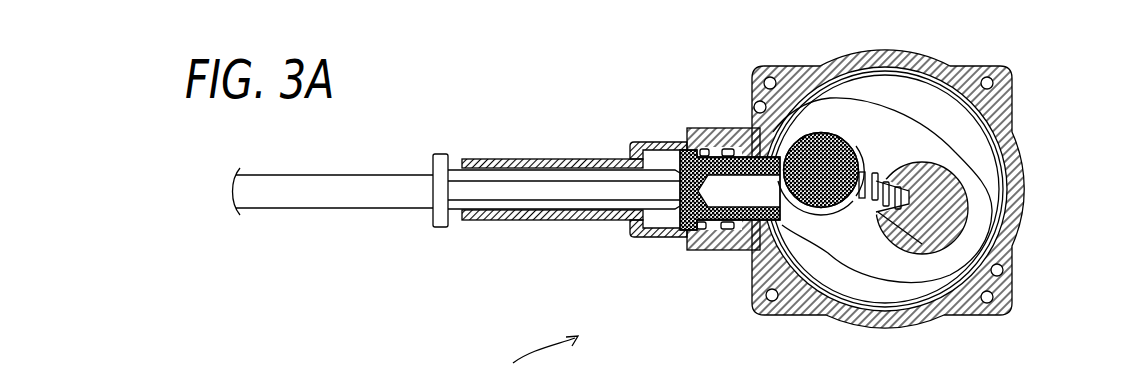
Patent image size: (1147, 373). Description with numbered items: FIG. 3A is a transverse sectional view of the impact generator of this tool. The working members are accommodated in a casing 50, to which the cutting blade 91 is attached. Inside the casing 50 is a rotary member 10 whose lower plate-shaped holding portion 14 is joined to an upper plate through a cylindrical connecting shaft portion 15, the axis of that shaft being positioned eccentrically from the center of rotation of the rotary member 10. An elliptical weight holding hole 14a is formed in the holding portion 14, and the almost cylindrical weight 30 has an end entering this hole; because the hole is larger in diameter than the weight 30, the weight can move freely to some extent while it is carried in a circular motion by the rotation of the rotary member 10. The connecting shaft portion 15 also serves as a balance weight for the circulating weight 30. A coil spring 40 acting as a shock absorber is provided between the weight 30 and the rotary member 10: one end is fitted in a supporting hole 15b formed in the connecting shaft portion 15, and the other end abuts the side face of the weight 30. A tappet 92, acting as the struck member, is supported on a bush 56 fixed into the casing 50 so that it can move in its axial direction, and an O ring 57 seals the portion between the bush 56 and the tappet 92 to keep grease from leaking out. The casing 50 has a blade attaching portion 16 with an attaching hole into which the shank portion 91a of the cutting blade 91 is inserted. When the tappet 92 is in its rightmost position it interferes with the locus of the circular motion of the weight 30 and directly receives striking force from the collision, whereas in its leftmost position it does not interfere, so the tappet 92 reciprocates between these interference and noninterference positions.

The rotary member 10 is at (990, 161).
The lower plate-shaped holding portion 14 is at (972, 240).
The weight holding hole 14a is at (864, 148).
The connecting shaft portion 15 is at (968, 213).
The supporting hole 15b is at (920, 233).
The blade attaching portion 16 is at (527, 220).
The weight 30 is at (832, 150).
The coil spring 40 is at (893, 170).
The casing 50 is at (748, 258).
The bush 56 is at (722, 250).
The O ring 57 is at (725, 149).
The cutting blade 91 is at (410, 229).
The shank portion 91a is at (487, 183).
The tappet 92 is at (670, 237).